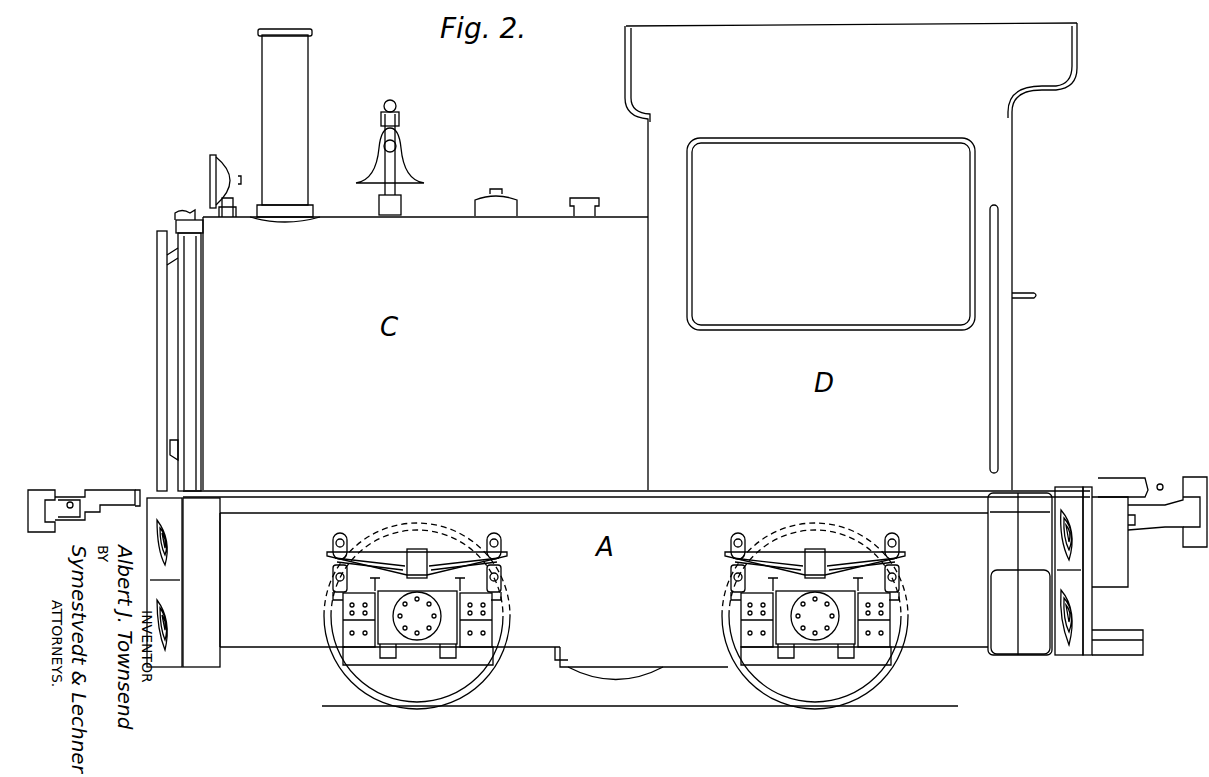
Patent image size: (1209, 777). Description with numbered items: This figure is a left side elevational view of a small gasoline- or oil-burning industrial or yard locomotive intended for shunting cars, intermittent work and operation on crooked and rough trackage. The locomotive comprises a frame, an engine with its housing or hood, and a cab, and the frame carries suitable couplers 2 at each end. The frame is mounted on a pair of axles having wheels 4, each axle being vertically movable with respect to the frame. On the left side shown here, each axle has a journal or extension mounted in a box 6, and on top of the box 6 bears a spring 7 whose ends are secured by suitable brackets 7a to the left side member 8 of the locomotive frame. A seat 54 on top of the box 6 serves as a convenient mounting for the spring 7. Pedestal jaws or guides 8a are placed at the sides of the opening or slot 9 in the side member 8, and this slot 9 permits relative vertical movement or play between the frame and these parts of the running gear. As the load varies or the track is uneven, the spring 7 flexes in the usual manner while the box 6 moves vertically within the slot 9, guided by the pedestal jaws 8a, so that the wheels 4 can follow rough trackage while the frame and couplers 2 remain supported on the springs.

The couplers 2 is at (77, 512).
The wheels 4 is at (352, 688).
The box 6 is at (446, 638).
The spring 7 is at (440, 556).
The brackets 7a is at (332, 580).
The left side member 8 is at (433, 580).
The pedestal jaws or guides 8a is at (392, 648).
The opening or slot 9 is at (428, 648).
The seat 54 is at (410, 578).